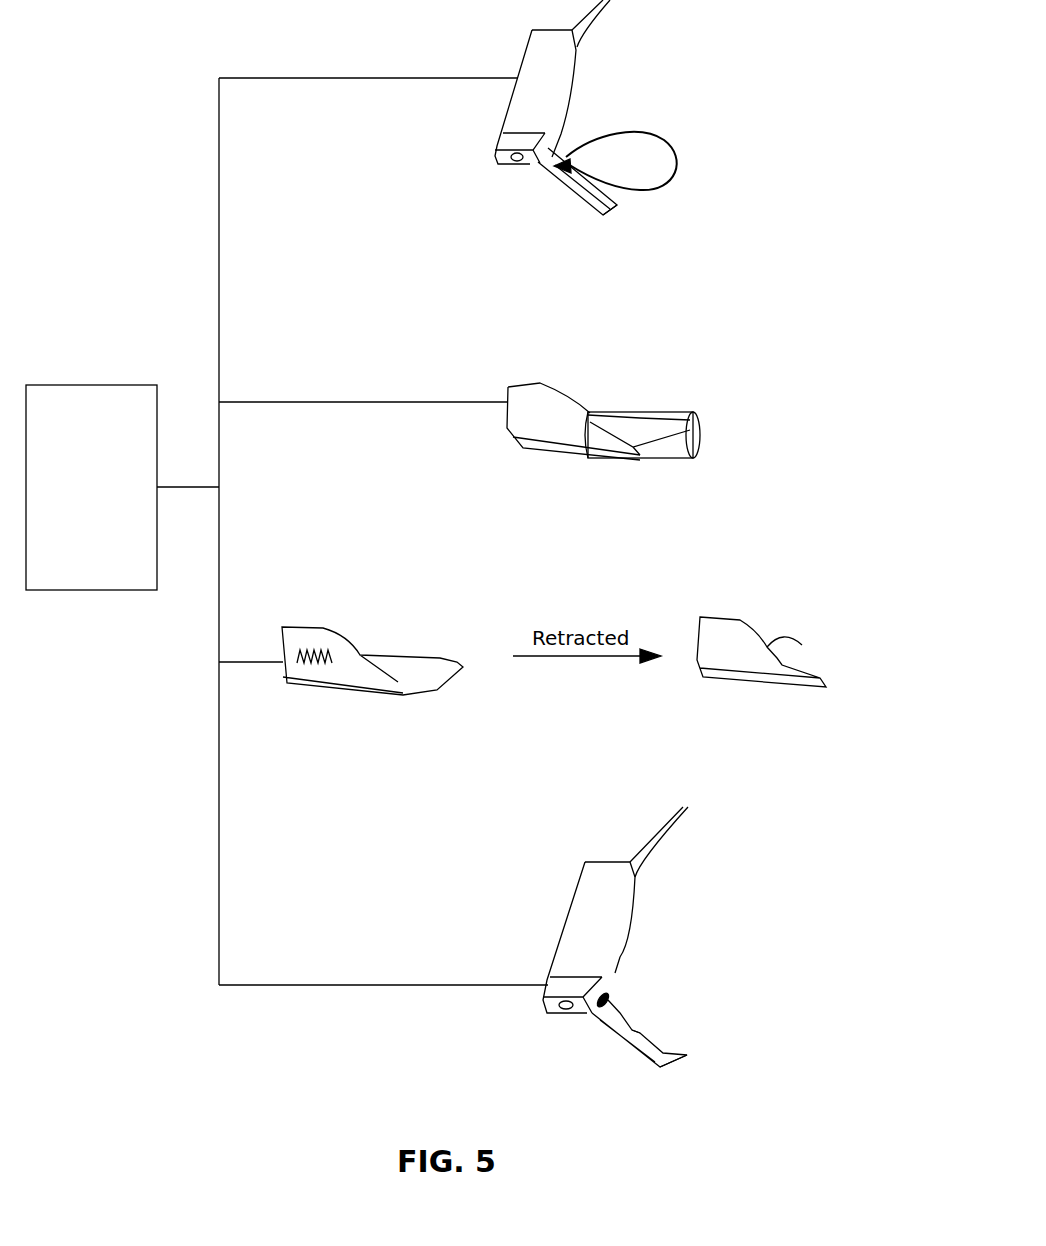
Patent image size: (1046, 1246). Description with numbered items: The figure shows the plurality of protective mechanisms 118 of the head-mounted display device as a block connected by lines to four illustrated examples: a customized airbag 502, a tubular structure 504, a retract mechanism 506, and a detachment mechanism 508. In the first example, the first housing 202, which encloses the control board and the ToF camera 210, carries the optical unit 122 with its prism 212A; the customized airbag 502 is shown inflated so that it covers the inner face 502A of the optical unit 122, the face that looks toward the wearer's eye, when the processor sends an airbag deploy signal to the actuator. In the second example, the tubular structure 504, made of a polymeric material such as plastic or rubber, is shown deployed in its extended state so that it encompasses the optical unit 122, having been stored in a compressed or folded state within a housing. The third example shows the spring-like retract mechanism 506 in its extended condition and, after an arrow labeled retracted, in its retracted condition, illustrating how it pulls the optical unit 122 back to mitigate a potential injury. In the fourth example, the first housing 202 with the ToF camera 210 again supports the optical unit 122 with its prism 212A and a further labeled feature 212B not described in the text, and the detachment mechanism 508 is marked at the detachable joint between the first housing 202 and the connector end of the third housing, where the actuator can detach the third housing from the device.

The plurality of protective mechanisms 118 is at (91, 487).
The first housing 202 is at (593, 907).
The ToF camera 210 is at (587, 1063).
The optical unit 122 is at (697, 1107).
The prism 212A is at (717, 1083).
The notch 212B is at (637, 1030).
The customized airbag 502 is at (670, 160).
The inner face 502A is at (572, 170).
The tubular structure 504 is at (687, 411).
The retract mechanism 506 is at (877, 606).
The detachment mechanism 508 is at (610, 997).